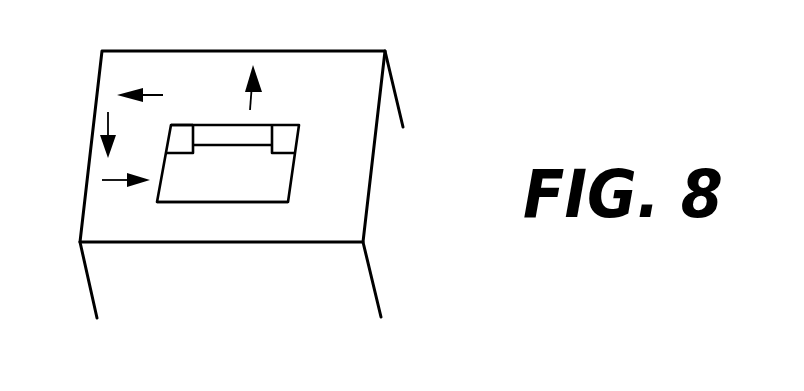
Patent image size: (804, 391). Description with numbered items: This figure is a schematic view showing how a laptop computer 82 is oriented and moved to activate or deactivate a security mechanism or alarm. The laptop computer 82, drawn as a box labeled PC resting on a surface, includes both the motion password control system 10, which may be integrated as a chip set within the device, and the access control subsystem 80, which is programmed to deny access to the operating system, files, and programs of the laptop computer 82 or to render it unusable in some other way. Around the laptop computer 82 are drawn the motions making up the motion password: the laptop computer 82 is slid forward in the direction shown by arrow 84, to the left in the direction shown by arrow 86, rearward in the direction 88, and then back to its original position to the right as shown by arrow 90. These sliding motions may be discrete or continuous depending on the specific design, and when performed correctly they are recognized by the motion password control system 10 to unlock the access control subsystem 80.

The motion password control system 10 is at (297, 125).
The access control subsystem 80 is at (174, 124).
The laptop computer 82 is at (290, 200).
The arrow 84 is at (253, 100).
The arrow 86 is at (152, 95).
The direction 88 is at (108, 128).
The arrow 90 is at (110, 180).